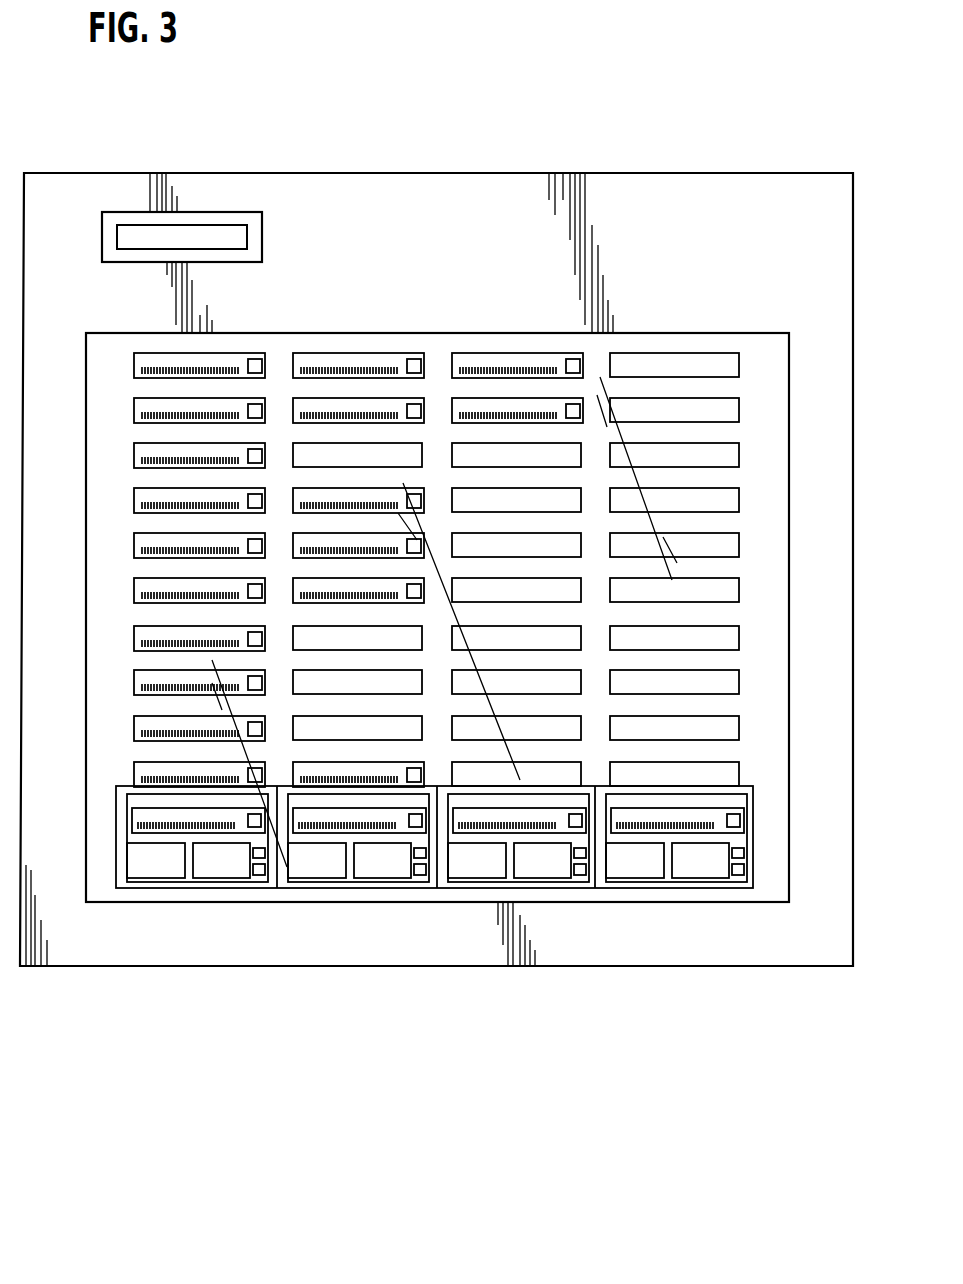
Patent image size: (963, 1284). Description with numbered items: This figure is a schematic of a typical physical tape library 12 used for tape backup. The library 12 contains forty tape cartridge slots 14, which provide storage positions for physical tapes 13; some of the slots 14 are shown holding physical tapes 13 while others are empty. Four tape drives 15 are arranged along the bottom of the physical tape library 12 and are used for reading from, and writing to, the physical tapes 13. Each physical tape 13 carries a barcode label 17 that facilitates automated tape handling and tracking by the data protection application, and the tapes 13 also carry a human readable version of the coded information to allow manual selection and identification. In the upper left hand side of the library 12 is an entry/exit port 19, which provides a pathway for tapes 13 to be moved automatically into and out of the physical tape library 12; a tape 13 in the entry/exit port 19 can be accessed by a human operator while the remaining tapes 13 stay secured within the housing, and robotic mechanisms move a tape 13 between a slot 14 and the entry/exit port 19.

The physical tape library 12 is at (311, 1005).
The physical tape 13 is at (134, 449).
The tape cartridge slot 14 is at (145, 740).
The tape drive 15 is at (257, 884).
The barcode label 17 is at (137, 597).
The entry/exit port 19 is at (207, 235).